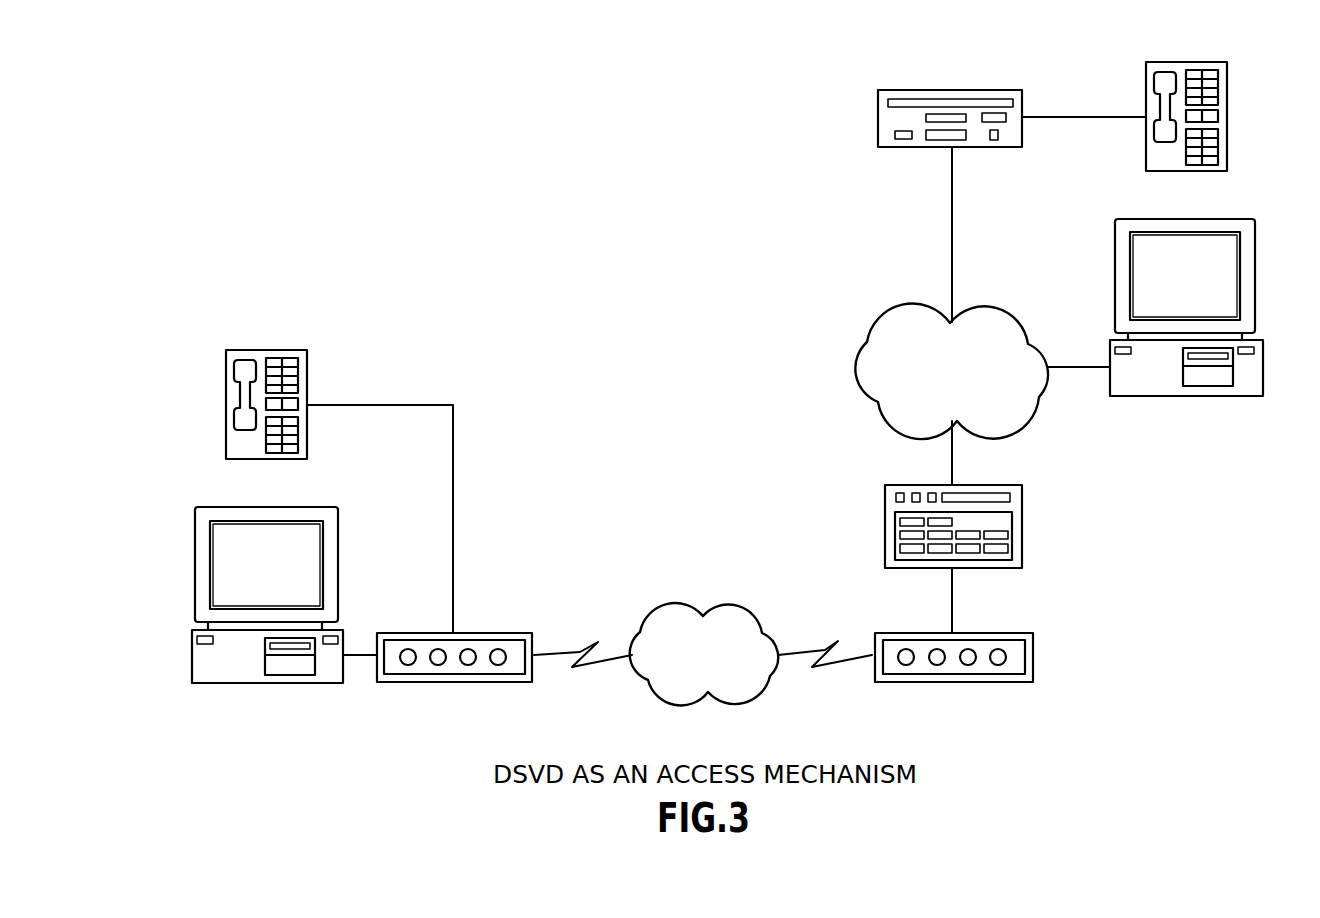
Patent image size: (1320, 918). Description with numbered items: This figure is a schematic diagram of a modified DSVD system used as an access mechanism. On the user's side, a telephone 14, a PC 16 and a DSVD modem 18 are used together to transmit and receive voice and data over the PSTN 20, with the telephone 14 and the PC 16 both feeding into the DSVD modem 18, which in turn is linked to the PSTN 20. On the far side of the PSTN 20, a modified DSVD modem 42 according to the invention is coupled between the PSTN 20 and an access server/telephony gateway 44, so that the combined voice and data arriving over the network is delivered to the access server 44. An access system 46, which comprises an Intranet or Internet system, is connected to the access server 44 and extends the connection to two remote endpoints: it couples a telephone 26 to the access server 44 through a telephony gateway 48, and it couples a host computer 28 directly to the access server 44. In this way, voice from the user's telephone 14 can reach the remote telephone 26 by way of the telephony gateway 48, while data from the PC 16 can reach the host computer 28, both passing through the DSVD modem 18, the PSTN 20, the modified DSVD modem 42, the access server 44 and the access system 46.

The telephone 14 is at (268, 350).
The PC 16 is at (338, 560).
The DSVD modem 18 is at (493, 632).
The PSTN 20 is at (728, 607).
The modified DSVD modem 42 is at (994, 632).
The access server/telephony gateway 44 is at (885, 527).
The access system 46 is at (1000, 316).
The telephony gateway 48 is at (878, 117).
The telephone 26 is at (1226, 110).
The host computer 28 is at (1115, 266).